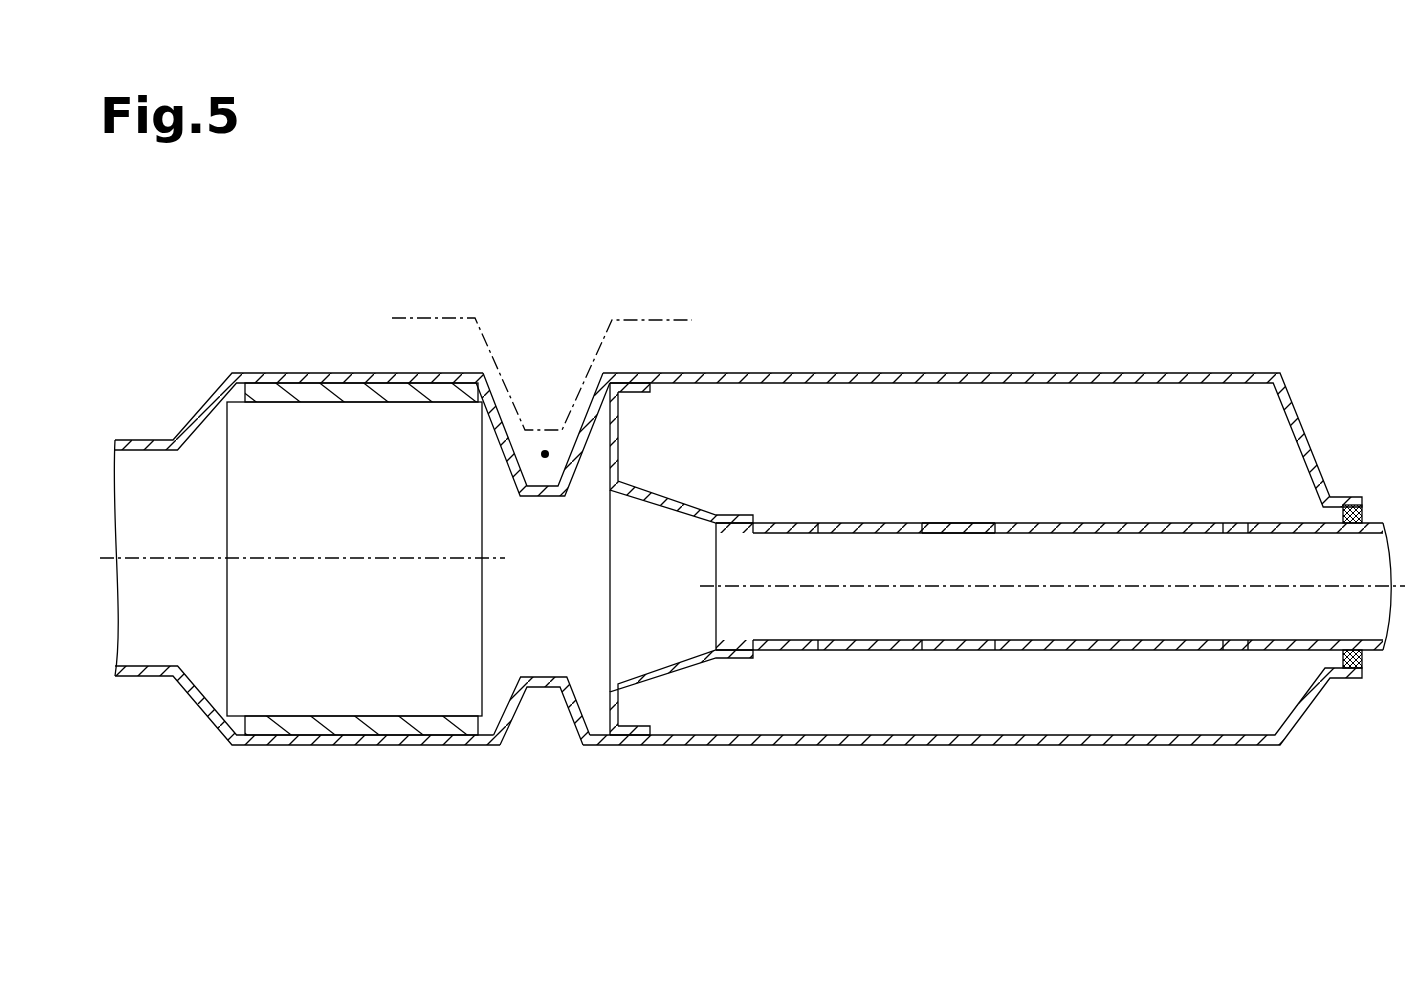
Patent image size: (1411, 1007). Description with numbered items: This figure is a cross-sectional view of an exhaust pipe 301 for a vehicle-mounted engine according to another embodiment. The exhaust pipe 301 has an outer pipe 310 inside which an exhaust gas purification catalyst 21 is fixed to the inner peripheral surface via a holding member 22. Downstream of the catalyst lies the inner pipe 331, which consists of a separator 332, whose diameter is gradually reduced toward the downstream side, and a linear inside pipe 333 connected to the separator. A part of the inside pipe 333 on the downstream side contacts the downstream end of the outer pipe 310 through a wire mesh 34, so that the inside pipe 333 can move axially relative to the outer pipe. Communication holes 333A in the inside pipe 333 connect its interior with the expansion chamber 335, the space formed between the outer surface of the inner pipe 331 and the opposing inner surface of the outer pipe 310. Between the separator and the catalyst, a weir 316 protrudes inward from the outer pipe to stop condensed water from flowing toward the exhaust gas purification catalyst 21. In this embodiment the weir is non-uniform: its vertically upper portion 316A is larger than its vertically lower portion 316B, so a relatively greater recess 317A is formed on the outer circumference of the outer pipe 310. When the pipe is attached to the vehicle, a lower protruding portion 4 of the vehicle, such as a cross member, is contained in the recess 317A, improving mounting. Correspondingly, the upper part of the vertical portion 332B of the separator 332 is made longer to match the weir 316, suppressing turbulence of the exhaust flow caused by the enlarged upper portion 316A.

The exhaust pipe 301 is at (660, 800).
The outer pipe 310 is at (881, 373).
The weir 316 is at (543, 559).
The vertically upper portion of the weir 316A is at (534, 492).
The vertically lower portion of the weir 316B is at (532, 680).
The recess 317A is at (548, 455).
The exhaust gas purification catalyst 21 is at (227, 505).
The holding member 22 is at (463, 392).
The lower protruding portion of the vehicle 4 is at (612, 335).
The separator 332 is at (782, 617).
The vertical portion of the separator 332B is at (620, 408).
The inner pipe 331 is at (663, 591).
The inside pipe 333 is at (777, 640).
The communication holes 333A is at (987, 533).
The expansion chamber 335 is at (990, 471).
The wire mesh 34 is at (1353, 650).